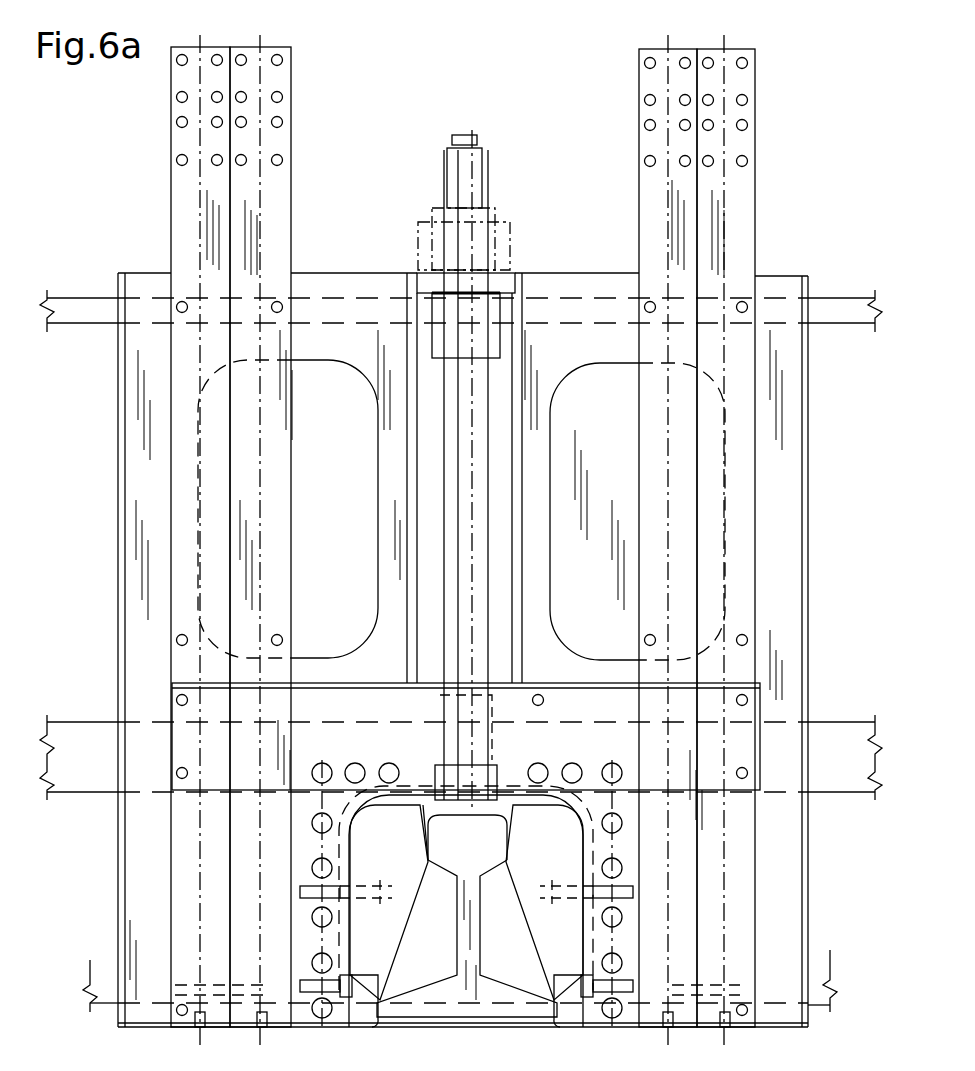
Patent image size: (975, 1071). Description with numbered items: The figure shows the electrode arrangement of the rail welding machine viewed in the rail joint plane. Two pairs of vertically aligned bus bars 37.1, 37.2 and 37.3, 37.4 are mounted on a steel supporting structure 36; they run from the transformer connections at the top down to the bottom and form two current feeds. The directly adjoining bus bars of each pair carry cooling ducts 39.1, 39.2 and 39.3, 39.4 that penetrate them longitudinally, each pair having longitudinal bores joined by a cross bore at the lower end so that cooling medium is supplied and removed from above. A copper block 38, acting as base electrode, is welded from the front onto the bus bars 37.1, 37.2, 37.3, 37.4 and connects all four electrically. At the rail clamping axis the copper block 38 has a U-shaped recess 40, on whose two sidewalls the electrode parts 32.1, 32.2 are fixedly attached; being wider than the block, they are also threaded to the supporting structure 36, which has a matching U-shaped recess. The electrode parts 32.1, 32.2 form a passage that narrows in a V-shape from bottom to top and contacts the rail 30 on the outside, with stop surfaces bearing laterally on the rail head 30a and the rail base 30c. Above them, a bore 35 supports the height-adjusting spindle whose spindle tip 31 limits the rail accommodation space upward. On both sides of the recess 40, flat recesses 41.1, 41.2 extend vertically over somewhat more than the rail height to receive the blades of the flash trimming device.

The rail 30 is at (420, 1034).
The rail head 30a is at (478, 848).
The rail base 30c is at (530, 948).
The spindle tip 31 is at (614, 828).
The electrode part 32.1 is at (410, 848).
The electrode part 32.2 is at (562, 848).
The bore 35 is at (493, 772).
The supporting structure 36 is at (332, 340).
The bus bar 37.1 is at (188, 195).
The bus bar 37.2 is at (268, 197).
The bus bar 37.3 is at (655, 207).
The bus bar 37.4 is at (730, 207).
The copper block 38 is at (228, 738).
The cooling duct 39.1 is at (188, 236).
The cooling duct 39.2 is at (272, 236).
The cooling duct 39.3 is at (668, 245).
The cooling duct 39.4 is at (724, 241).
The U-shaped recess 40 is at (426, 810).
The flat recess 41.1 is at (311, 804).
The flat recess 41.2 is at (622, 808).